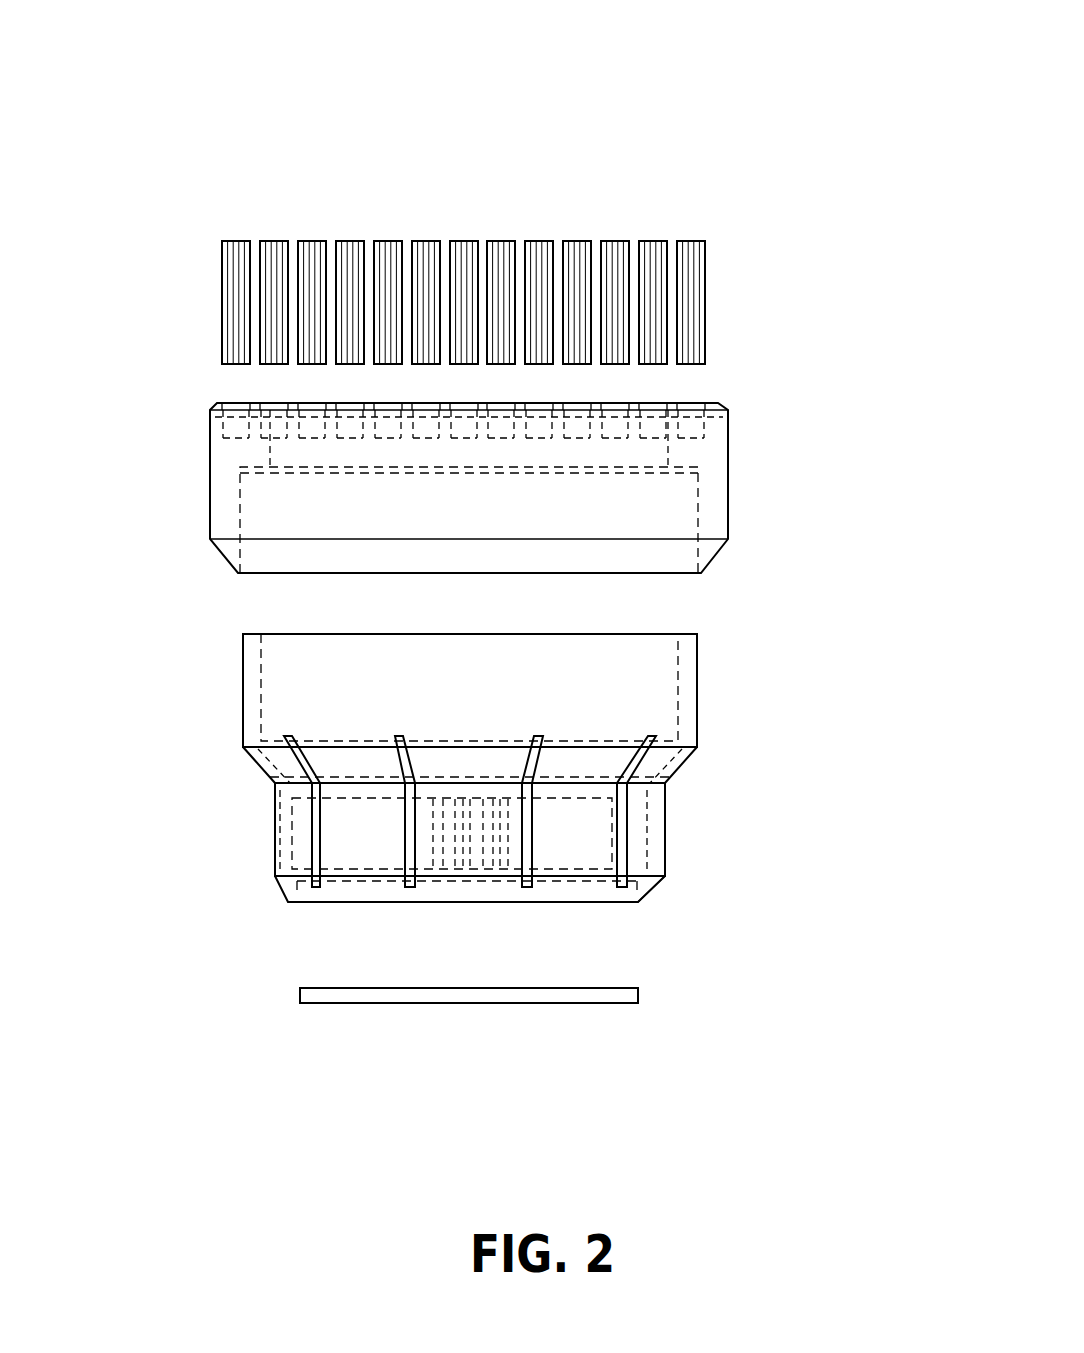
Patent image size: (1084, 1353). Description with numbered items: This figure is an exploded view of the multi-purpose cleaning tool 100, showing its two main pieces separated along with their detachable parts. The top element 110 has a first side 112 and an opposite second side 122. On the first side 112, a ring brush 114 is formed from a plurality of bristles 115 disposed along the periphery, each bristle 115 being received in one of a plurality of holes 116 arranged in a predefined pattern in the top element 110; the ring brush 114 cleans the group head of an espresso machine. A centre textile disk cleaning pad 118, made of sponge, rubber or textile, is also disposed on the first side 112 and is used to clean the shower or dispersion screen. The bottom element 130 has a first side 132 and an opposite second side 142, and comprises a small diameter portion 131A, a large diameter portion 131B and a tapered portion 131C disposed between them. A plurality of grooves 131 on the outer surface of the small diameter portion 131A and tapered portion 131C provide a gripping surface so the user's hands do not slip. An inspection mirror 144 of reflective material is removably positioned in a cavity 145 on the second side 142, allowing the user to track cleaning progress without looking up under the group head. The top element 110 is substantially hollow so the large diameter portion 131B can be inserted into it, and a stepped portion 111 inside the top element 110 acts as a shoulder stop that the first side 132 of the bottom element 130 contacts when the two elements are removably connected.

The multi-purpose cleaning tool 100 is at (802, 132).
The top element 110 is at (736, 478).
The stepped portion 111 is at (252, 468).
The first side 112 is at (690, 400).
The ring brush 114 is at (712, 266).
The bristles 115 is at (548, 255).
The holes 116 is at (543, 405).
The centre textile disk cleaning pad 118 is at (420, 460).
The second side 122 is at (242, 572).
The bottom element 130 is at (719, 700).
The grooves 131 is at (630, 815).
The small diameter portion 131A is at (277, 822).
The large diameter portion 131B is at (250, 700).
The tapered portion 131C is at (265, 765).
The first side 132 is at (660, 634).
The second side 142 is at (300, 905).
The inspection mirror 144 is at (340, 992).
The cavity 145 is at (637, 890).